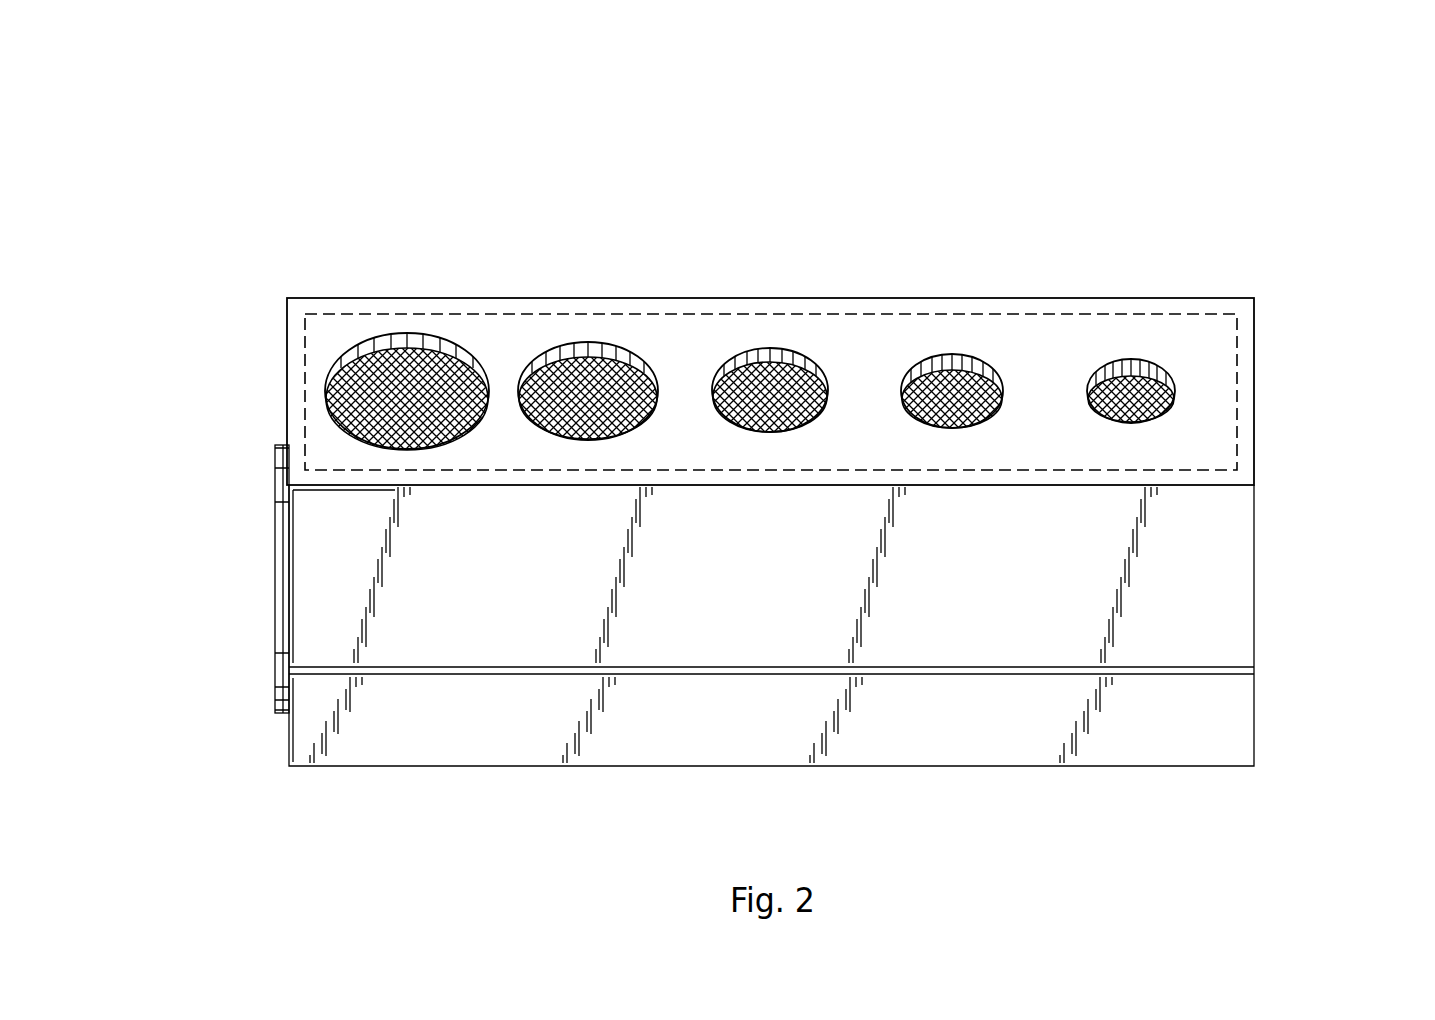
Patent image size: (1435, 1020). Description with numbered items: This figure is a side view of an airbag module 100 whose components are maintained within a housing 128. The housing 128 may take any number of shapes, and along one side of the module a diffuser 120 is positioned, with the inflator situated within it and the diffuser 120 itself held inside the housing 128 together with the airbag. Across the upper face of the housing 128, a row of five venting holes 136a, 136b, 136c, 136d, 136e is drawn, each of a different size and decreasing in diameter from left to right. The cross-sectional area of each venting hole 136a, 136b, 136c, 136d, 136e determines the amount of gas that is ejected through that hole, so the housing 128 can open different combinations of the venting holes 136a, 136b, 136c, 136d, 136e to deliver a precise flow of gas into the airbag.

The airbag module 100 is at (1318, 240).
The diffuser 120 is at (275, 598).
The housing 128 is at (1256, 385).
The venting hole 136a is at (410, 362).
The venting hole 136b is at (583, 380).
The venting hole 136c is at (767, 386).
The venting hole 136d is at (948, 397).
The venting hole 136e is at (1133, 400).